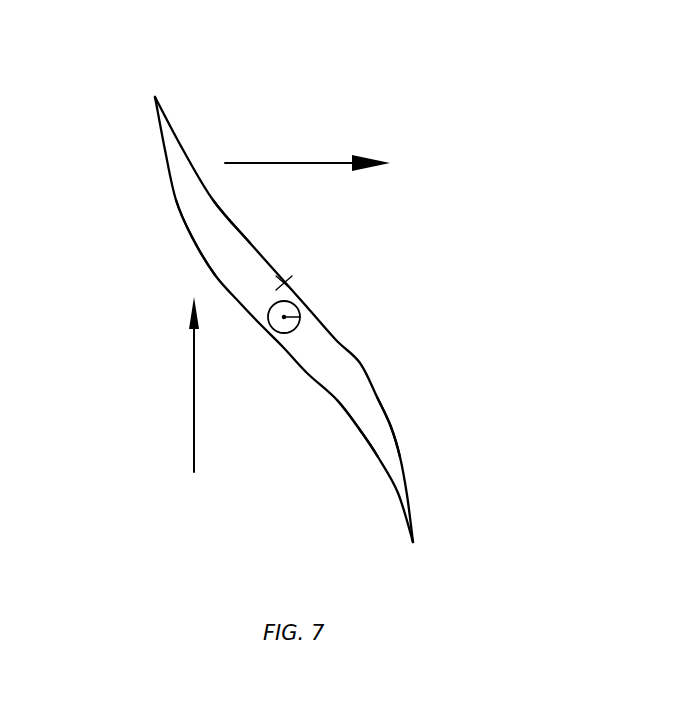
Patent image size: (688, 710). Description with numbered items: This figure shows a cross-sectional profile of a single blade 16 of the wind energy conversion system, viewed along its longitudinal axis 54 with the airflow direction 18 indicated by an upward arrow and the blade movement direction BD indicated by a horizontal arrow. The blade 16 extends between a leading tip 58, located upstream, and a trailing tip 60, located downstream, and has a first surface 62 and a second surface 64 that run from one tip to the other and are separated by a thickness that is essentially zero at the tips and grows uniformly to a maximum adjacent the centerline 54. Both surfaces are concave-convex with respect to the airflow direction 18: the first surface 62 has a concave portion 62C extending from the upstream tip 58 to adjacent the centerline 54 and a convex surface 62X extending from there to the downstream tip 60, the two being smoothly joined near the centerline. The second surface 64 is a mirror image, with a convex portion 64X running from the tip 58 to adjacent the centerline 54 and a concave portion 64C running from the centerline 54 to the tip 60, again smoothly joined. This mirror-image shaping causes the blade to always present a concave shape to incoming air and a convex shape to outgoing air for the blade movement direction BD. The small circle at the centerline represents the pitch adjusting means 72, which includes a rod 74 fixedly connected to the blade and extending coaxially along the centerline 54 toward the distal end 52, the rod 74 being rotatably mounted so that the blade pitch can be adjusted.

The blade 16 is at (309, 319).
The airflow direction 18 is at (194, 415).
The blade movement direction BD is at (302, 163).
The distal end 52 is at (276, 289).
The longitudinal axis 54 is at (284, 317).
The leading tip 58 is at (413, 542).
The trailing tip 60 is at (155, 97).
The first surface 62 is at (338, 416).
The concave portion 62C is at (361, 431).
The convex surface 62X is at (191, 237).
The second surface 64 is at (372, 358).
The concave portion 64C is at (232, 222).
The convex portion 64X is at (392, 427).
The pitch adjusting means 72 is at (294, 346).
The rod 74 is at (293, 323).